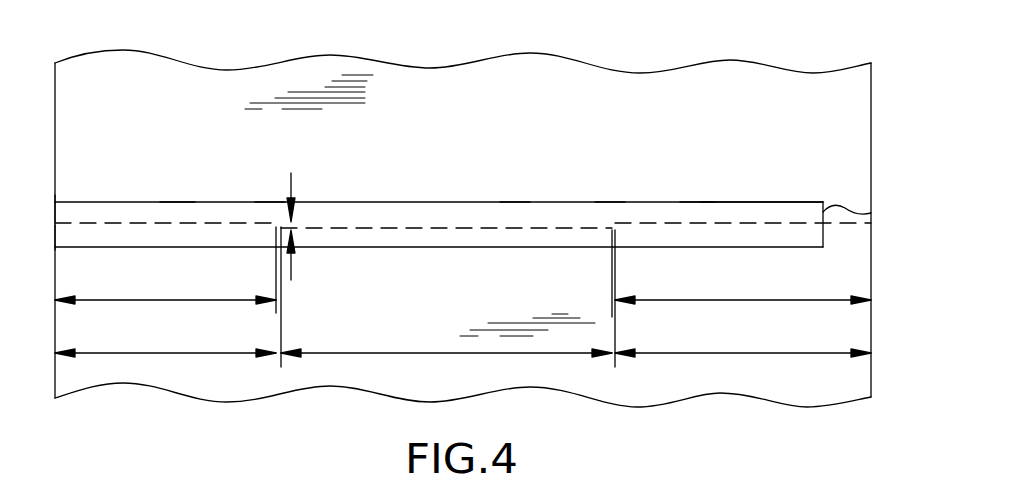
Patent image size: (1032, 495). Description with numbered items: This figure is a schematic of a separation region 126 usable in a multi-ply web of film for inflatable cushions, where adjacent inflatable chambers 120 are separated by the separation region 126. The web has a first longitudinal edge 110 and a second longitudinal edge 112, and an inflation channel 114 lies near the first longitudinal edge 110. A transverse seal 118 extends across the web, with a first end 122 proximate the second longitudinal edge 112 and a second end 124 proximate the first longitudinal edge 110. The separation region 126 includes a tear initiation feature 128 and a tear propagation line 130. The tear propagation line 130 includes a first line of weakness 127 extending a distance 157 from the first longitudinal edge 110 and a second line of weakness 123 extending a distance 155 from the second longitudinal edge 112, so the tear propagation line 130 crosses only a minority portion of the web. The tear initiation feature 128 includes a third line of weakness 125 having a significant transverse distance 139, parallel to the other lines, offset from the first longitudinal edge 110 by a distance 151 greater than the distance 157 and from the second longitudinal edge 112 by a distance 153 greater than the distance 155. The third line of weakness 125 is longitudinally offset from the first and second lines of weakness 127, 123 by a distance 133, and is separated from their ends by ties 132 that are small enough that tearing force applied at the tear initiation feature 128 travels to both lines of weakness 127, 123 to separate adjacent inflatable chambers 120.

The first longitudinal edge 110 is at (870, 207).
The second longitudinal edge 112 is at (52, 218).
The inflation channel 114 is at (868, 260).
The transverse seal 118 is at (358, 200).
The inflatable chamber 120 is at (462, 125).
The first end 122 is at (52, 228).
The second line of weakness 123 is at (232, 223).
The second end 124 is at (873, 213).
The third line of weakness 125 is at (530, 228).
The separation region 126 is at (761, 197).
The first line of weakness 127 is at (670, 223).
The tear initiation feature 128 is at (514, 197).
The tear propagation line 130 is at (176, 197).
The tie 132 is at (268, 197).
The distance 133 is at (291, 263).
The transverse distance 139 is at (447, 353).
The distance 151 is at (742, 353).
The distance 153 is at (167, 353).
The distance 155 is at (167, 300).
The distance 157 is at (743, 300).